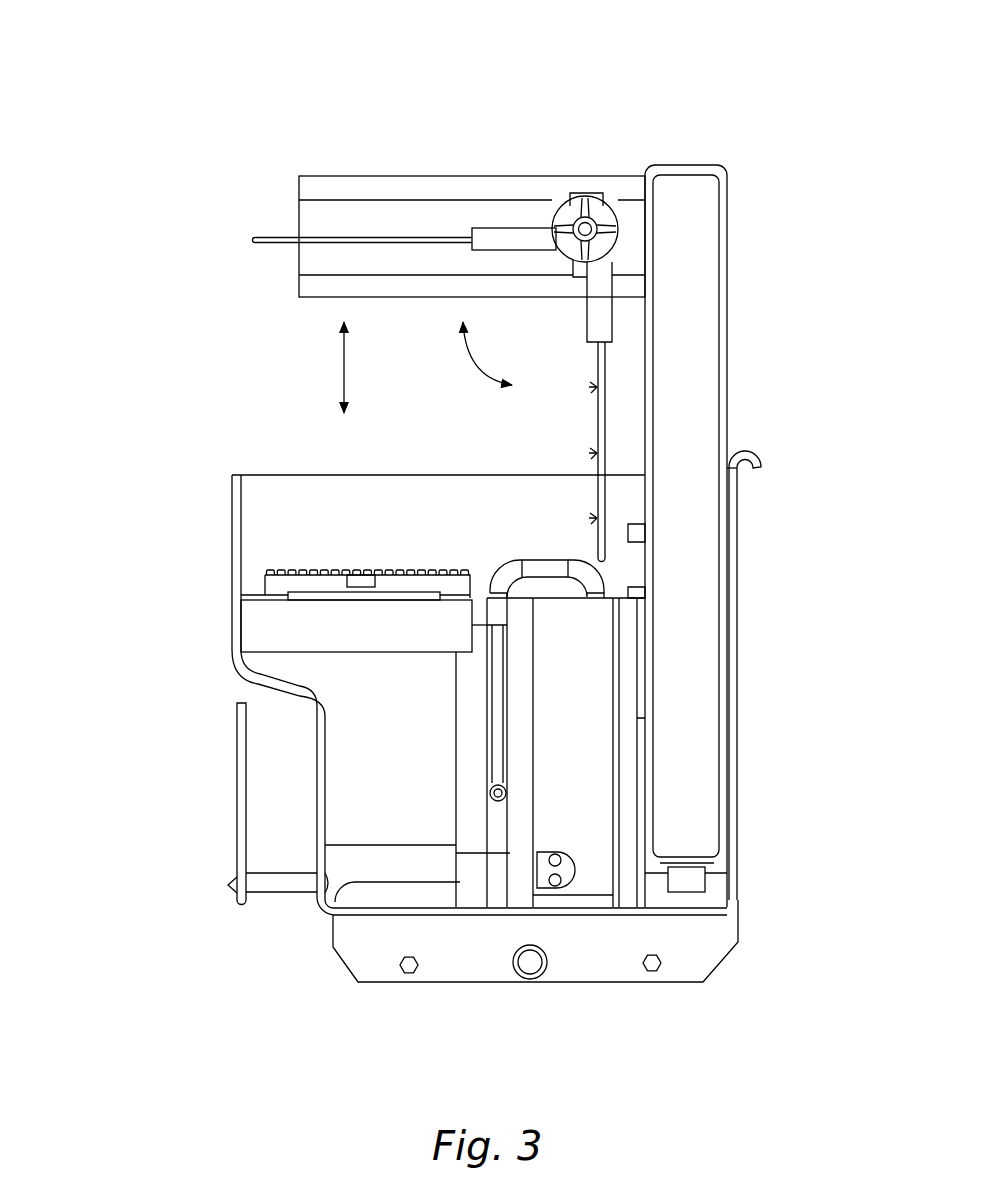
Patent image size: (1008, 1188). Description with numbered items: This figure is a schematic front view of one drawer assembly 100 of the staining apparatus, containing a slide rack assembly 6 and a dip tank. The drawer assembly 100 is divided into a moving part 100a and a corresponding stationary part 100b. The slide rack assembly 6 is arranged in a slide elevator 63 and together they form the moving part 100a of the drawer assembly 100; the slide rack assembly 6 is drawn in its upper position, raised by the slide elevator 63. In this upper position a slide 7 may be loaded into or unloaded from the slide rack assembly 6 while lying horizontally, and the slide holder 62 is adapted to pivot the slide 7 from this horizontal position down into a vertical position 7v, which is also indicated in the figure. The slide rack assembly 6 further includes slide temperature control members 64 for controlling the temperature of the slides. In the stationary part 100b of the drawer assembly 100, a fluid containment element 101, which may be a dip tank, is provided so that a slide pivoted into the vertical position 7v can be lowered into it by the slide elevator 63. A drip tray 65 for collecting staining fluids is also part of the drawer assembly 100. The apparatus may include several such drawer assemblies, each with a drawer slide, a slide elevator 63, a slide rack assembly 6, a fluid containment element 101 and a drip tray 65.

The slide rack assembly 6 is at (555, 112).
The slide 7 is at (266, 238).
The vertical position of the slide 7v is at (605, 417).
The slide holder 62 is at (597, 183).
The slide elevator 63 is at (688, 247).
The slide temperature control member 64 is at (278, 578).
The drip tray 65 is at (349, 708).
The drawer assembly 100 is at (176, 310).
The moving part of the drawer assembly 100a is at (768, 478).
The stationary part of the drawer assembly 100b is at (186, 588).
The fluid containment element 101 is at (587, 703).